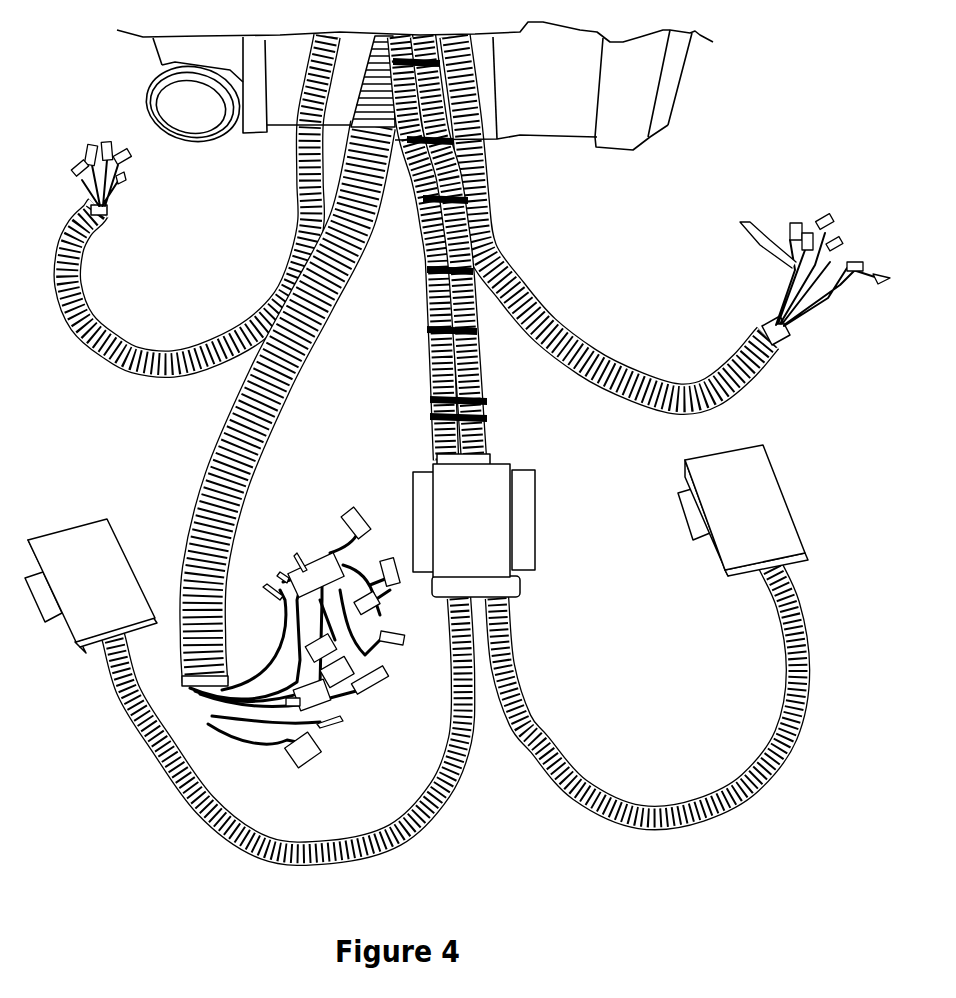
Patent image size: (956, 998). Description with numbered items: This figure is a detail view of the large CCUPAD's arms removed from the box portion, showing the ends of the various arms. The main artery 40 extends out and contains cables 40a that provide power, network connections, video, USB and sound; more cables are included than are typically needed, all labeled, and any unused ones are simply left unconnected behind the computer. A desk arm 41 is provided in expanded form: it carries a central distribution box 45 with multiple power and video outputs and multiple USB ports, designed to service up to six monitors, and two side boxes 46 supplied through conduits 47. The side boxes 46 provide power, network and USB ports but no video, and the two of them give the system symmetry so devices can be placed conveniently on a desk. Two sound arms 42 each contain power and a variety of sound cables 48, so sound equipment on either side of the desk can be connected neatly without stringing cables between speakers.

The main artery 40 is at (290, 386).
The cables 40a is at (317, 550).
The desk arm 41 is at (421, 312).
The sound arms 42 is at (90, 312).
The central distribution box 45 is at (523, 525).
The side boxes 46 is at (105, 570).
The conduits 47 is at (262, 846).
The sound cables 48 is at (82, 160).